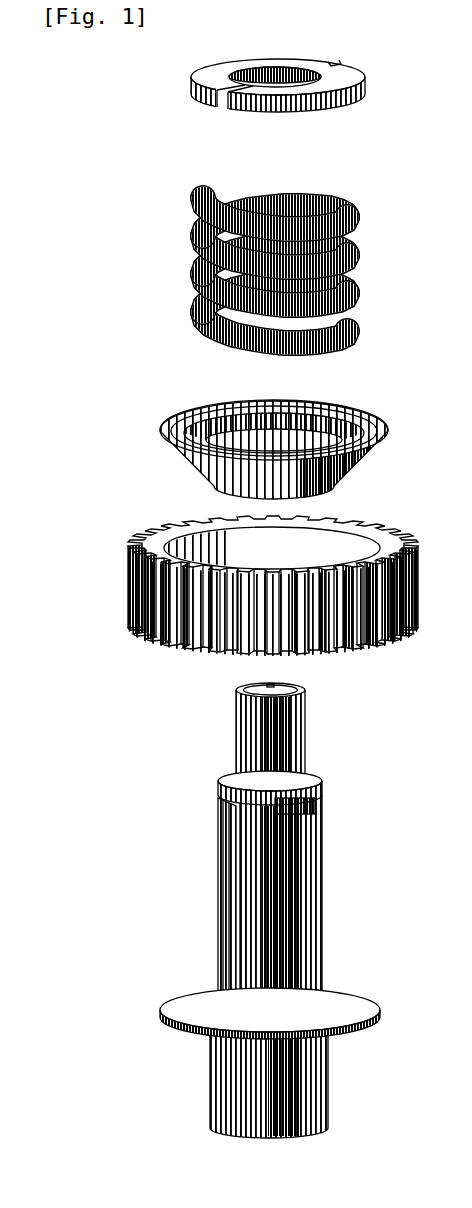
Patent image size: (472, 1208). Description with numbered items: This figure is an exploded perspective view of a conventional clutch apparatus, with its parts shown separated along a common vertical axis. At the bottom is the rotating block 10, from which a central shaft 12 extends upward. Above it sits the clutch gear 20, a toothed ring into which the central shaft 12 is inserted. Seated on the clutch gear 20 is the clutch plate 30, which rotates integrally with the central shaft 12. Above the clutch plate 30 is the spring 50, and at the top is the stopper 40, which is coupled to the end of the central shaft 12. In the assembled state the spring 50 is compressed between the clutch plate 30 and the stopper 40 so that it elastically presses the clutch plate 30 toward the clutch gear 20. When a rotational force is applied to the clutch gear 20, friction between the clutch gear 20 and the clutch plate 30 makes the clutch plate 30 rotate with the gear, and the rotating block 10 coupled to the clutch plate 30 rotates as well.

The rotating block 10 is at (218, 1085).
The central shaft 12 is at (272, 918).
The clutch gear 20 is at (148, 596).
The clutch plate 30 is at (200, 462).
The stopper 40 is at (198, 80).
The spring 50 is at (198, 248).